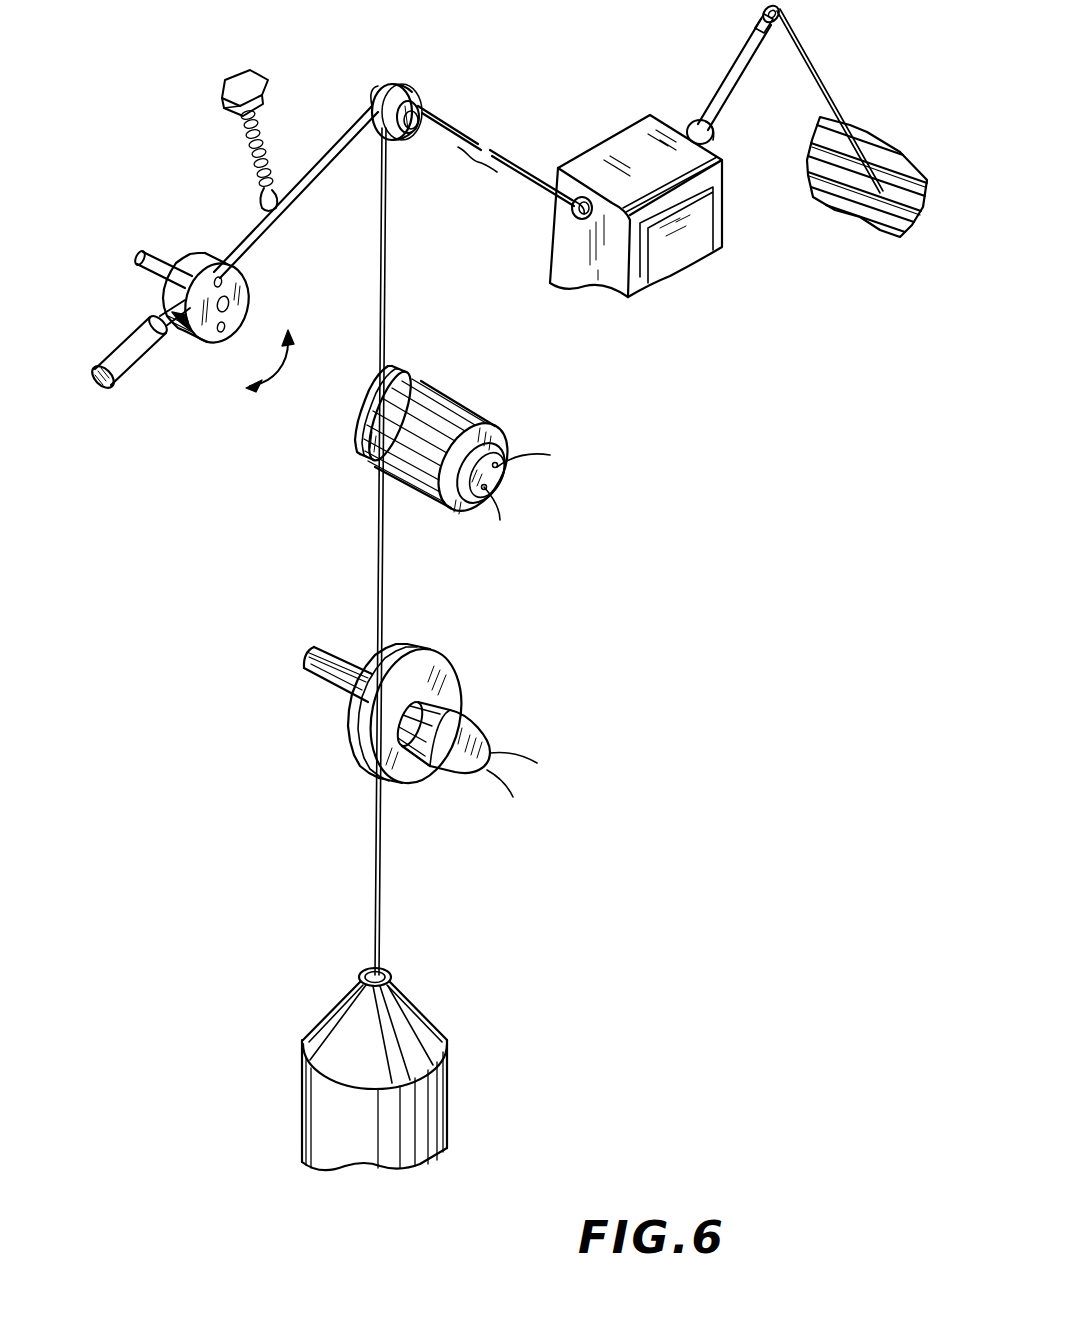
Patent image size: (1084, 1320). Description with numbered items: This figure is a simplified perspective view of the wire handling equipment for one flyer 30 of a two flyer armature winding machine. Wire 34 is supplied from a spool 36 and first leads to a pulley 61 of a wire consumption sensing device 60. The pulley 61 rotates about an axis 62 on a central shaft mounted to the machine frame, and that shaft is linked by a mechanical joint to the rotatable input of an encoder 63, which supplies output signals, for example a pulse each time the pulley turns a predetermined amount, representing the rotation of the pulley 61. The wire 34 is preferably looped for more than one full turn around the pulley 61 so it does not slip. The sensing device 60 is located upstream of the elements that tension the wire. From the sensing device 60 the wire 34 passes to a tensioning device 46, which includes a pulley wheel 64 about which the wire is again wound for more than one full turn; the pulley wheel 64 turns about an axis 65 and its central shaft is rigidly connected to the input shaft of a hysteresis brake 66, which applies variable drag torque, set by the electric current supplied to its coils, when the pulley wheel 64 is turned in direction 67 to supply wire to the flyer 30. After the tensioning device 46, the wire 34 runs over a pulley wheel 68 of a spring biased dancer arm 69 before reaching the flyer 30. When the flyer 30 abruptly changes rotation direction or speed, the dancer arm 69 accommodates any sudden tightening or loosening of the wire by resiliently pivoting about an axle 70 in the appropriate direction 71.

The flyer 30 is at (724, 77).
The wire 34 is at (381, 892).
The spool 36 is at (443, 1110).
The tensioning device 46 is at (508, 415).
The wire consumption sensing device 60 is at (495, 692).
The pulley 61 is at (448, 677).
The axis 62 is at (297, 650).
The encoder 63 is at (480, 742).
The pulley wheel 64 is at (412, 390).
The axis 65 is at (357, 393).
The hysteresis brake 66 is at (428, 497).
The direction 67 is at (369, 270).
The pulley wheel 68 is at (413, 104).
The spring biased dancer arm 69 is at (319, 50).
The axle 70 is at (172, 262).
The direction 71 is at (268, 356).